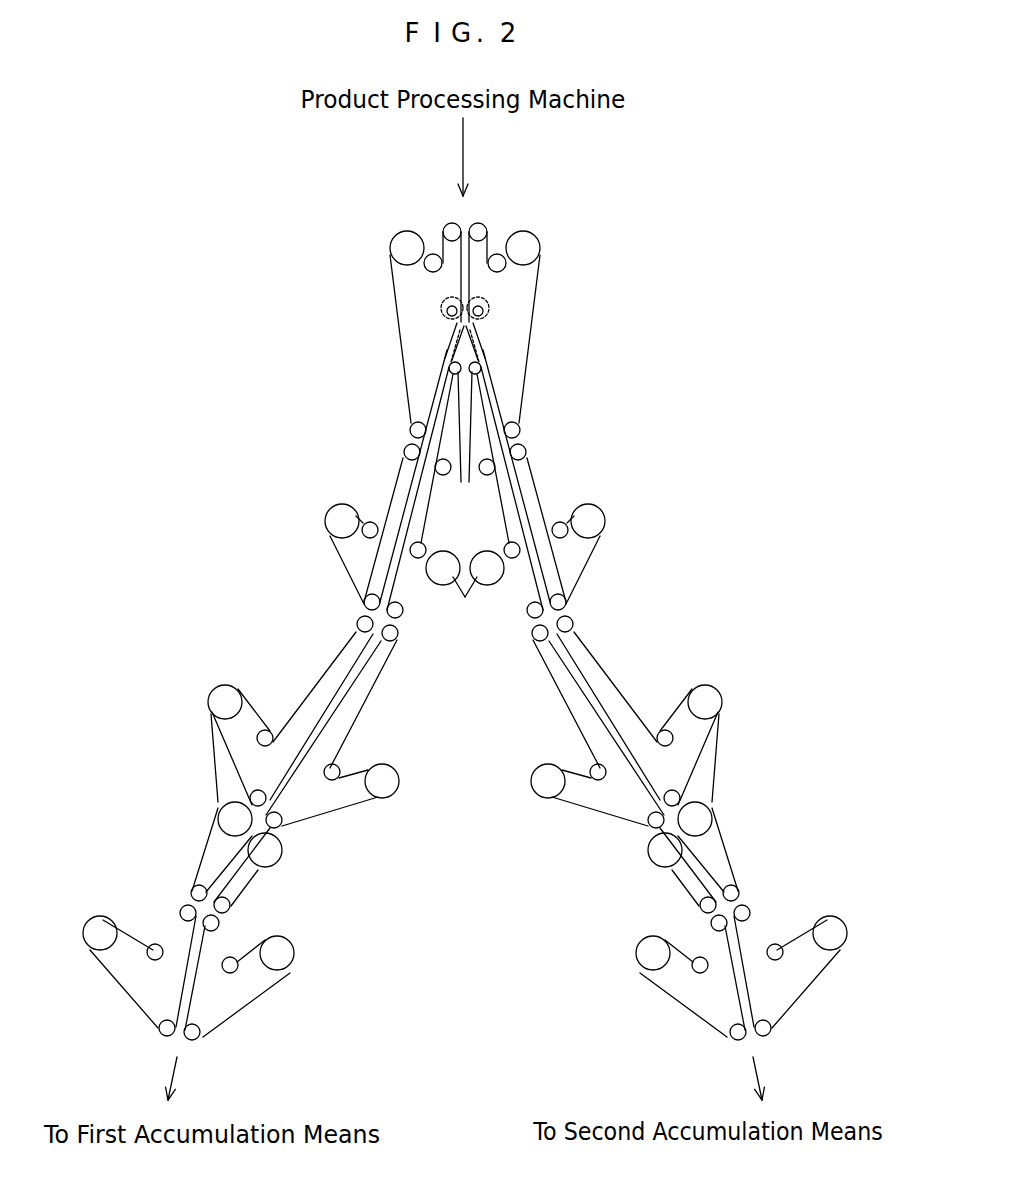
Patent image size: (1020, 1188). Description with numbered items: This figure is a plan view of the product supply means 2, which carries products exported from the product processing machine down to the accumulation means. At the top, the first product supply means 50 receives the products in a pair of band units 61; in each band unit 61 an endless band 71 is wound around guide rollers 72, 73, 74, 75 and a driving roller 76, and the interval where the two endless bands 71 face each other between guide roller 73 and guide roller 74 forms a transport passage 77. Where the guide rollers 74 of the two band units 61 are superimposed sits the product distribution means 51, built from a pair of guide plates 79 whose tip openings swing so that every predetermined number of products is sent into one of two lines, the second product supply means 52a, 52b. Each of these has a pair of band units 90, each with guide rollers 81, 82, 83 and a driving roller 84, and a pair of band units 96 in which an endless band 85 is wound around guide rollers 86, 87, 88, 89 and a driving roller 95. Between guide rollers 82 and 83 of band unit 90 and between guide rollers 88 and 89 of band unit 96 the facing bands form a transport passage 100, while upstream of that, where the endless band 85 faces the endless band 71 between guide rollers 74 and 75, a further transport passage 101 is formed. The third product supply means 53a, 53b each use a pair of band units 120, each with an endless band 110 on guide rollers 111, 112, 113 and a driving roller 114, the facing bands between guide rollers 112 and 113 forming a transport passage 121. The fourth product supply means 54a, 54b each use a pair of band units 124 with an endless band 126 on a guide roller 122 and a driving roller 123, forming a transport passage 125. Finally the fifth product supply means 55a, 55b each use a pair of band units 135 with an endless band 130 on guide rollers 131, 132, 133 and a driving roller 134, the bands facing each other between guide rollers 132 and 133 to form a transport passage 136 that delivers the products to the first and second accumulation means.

The product supply means 2 is at (670, 316).
The first product supply means 50 is at (560, 203).
The product distribution means 51 is at (502, 317).
The second product supply means 52a is at (372, 462).
The second product supply means 52b is at (558, 462).
The third product supply means 53a is at (298, 675).
The third product supply means 53b is at (632, 675).
The fourth product supply means 54a is at (205, 812).
The fourth product supply means 54b is at (728, 812).
The fifth product supply means 55a is at (237, 1022).
The fifth product supply means 55b is at (693, 1022).
The band unit 61 is at (412, 292).
The endless band 71 is at (524, 340).
The guide roller 72 is at (432, 254).
The guide roller 73 is at (452, 223).
The guide roller 74 is at (441, 307).
The guide roller 75 is at (410, 425).
The driving roller 76 is at (390, 248).
The transport passage 77 is at (476, 157).
The guide plate 79 is at (455, 336).
The guide roller 81 is at (374, 522).
The guide roller 82 is at (410, 434).
The guide roller 83 is at (365, 602).
The driving roller 84 is at (325, 520).
The endless band 85 is at (414, 444).
The guide roller 86 is at (508, 543).
The guide roller 87 is at (465, 440).
The guide roller 88 is at (449, 368).
The guide roller 89 is at (402, 616).
The band unit 90 is at (350, 572).
The driving roller 95 is at (465, 588).
The band unit 96 is at (517, 596).
The transport passage 100 is at (397, 482).
The transport passage 101 is at (436, 385).
The endless band 110 is at (213, 722).
The guide roller 111 is at (266, 728).
The guide roller 112 is at (358, 622).
The guide roller 113 is at (260, 788).
The driving roller 114 is at (215, 690).
The band unit 120 is at (248, 745).
The transport passage 121 is at (350, 665).
The guide roller 122 is at (191, 893).
The driving roller 123 is at (225, 805).
The band unit 124 is at (195, 872).
The transport passage 125 is at (198, 819).
The endless band 126 is at (205, 857).
The endless band 130 is at (98, 960).
The guide roller 131 is at (155, 961).
The guide roller 132 is at (180, 912).
The guide roller 133 is at (165, 1040).
The driving roller 134 is at (100, 916).
The band unit 135 is at (131, 979).
The transport passage 136 is at (160, 1037).